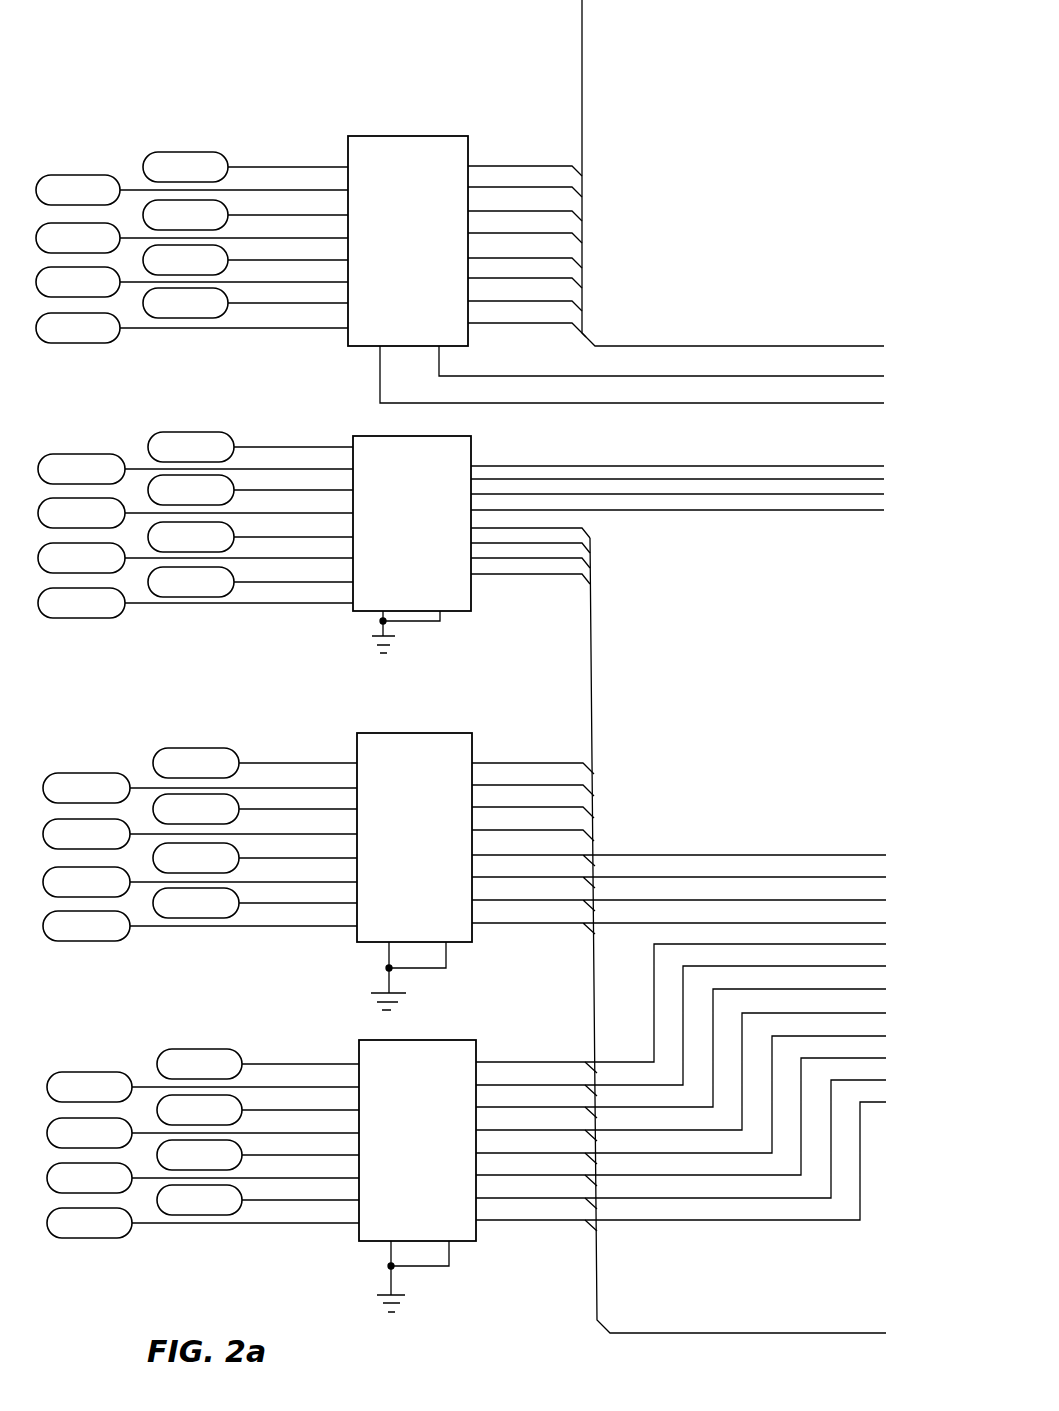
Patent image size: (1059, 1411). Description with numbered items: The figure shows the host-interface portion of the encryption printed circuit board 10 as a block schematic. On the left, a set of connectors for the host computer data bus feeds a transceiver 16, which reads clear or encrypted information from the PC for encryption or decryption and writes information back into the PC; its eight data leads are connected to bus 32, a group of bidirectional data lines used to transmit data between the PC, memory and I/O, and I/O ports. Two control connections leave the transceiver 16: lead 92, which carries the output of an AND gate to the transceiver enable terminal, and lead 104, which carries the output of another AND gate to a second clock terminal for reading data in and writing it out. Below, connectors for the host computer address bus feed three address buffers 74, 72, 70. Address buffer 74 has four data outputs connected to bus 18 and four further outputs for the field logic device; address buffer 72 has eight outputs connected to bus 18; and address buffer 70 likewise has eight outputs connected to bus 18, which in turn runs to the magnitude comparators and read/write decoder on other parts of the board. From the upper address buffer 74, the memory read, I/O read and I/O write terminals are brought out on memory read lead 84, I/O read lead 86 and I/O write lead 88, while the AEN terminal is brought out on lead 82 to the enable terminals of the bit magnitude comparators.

The encryption printed circuit board 10 is at (441, 46).
The transceiver 16 is at (348, 347).
The bus 32 is at (582, 117).
The lead 104 is at (806, 376).
The lead 92 is at (845, 403).
The memory read lead 84 is at (627, 466).
The I/O read lead 86 is at (684, 479).
The I/O write lead 88 is at (709, 494).
The lead 82 is at (755, 510).
The address buffer 74 is at (463, 611).
The address buffer 72 is at (470, 942).
The address buffer 70 is at (478, 1241).
The bus 18 is at (597, 1285).